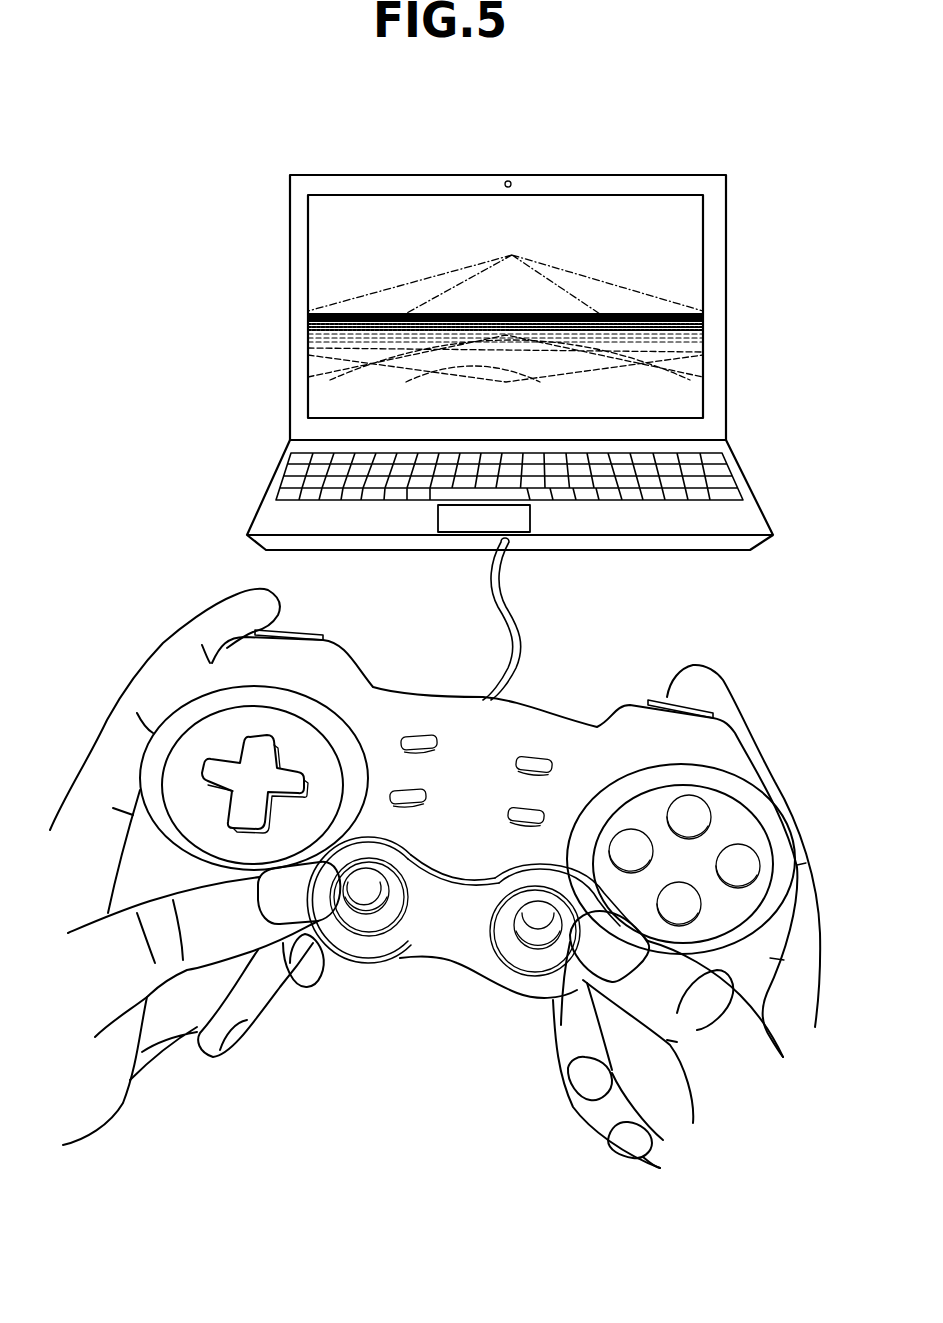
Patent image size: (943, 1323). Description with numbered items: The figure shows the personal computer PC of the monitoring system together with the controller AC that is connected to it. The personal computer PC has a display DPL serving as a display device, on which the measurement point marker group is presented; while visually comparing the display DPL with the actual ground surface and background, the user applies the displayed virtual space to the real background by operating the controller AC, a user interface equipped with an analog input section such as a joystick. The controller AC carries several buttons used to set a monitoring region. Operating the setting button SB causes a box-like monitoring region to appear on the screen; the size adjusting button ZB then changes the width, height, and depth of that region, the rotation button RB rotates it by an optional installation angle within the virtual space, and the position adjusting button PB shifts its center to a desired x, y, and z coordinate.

The personal computer PC is at (342, 175).
The display DPL is at (687, 272).
The controller AC is at (637, 698).
The setting button SB is at (692, 700).
The position adjusting button PB is at (217, 760).
The size adjusting button ZB is at (679, 903).
The rotation button RB is at (517, 930).